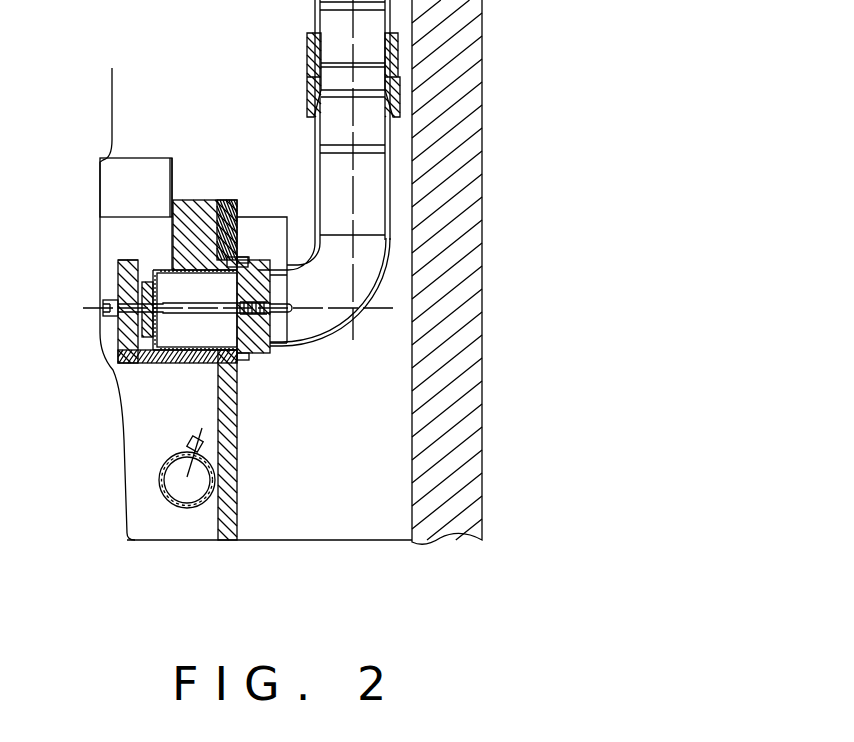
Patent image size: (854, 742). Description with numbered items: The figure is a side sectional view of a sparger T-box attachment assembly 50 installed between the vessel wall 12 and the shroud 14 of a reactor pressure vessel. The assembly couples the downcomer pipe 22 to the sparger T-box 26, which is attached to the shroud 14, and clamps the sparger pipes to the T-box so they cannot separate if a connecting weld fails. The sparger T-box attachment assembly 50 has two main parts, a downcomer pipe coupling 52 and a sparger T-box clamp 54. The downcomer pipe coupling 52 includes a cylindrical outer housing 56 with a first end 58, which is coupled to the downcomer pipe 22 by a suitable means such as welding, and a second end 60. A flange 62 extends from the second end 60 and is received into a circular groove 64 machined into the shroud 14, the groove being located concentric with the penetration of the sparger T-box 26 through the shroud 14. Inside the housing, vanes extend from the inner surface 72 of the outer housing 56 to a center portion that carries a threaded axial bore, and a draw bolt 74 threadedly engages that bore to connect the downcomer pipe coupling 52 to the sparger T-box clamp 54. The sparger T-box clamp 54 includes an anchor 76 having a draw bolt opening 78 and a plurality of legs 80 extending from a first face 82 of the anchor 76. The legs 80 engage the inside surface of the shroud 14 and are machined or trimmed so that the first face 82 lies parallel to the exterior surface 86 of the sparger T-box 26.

The vessel wall 12 is at (482, 202).
The shroud 14 is at (197, 200).
The downcomer pipe 22 is at (313, 162).
The sparger T-box 26 is at (182, 340).
The sparger T-box attachment assembly 50 is at (209, 134).
The downcomer pipe coupling 52 is at (268, 364).
The sparger T-box clamp 54 is at (100, 376).
The cylindrical outer housing 56 is at (257, 272).
The first end 58 is at (280, 353).
The second end 60 is at (245, 372).
The flange 62 is at (240, 257).
The circular groove 64 is at (220, 208).
The inner surface 72 is at (217, 400).
The draw bolt 74 is at (185, 303).
The anchor 76 is at (120, 342).
The draw bolt opening 78 is at (122, 288).
The legs 80 is at (152, 258).
The first face 82 is at (122, 357).
The exterior surface 86 is at (120, 270).